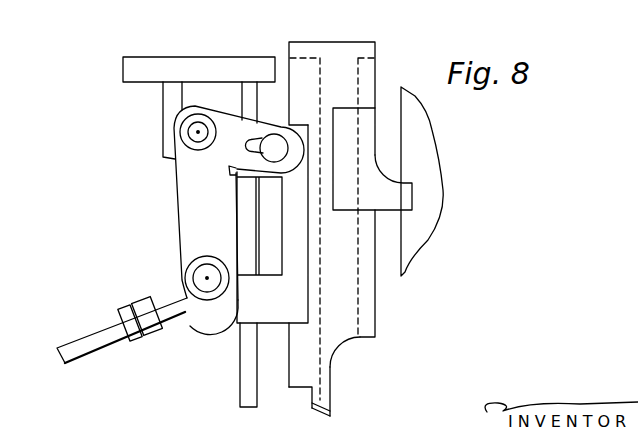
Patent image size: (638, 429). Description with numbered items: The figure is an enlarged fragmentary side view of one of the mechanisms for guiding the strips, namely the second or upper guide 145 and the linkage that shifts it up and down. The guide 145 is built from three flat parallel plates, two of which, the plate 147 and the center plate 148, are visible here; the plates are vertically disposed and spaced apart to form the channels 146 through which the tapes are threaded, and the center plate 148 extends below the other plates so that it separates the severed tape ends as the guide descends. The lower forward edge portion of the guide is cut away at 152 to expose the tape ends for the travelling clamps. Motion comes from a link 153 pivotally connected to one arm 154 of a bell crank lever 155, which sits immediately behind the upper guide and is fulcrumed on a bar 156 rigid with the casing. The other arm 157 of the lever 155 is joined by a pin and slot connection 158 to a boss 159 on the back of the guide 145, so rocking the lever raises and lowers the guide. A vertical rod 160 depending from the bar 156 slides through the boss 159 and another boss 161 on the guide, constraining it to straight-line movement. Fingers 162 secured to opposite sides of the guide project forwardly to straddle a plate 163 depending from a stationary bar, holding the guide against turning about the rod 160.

The second guide 145 is at (389, 318).
The channels 146 is at (358, 292).
The flat plate 147 is at (327, 397).
The center plate 148 is at (331, 415).
The cut away portion 152 is at (350, 347).
The link 153 is at (87, 333).
The arm 154 is at (182, 241).
The bell crank lever 155 is at (176, 206).
The bar 156 is at (171, 121).
The arm 157 is at (237, 117).
The pin and slot connection 158 is at (272, 129).
The boss 159 is at (231, 175).
The vertical rod 160 is at (245, 360).
The boss 161 is at (273, 324).
The fingers 162 is at (403, 188).
The plate 163 is at (402, 96).